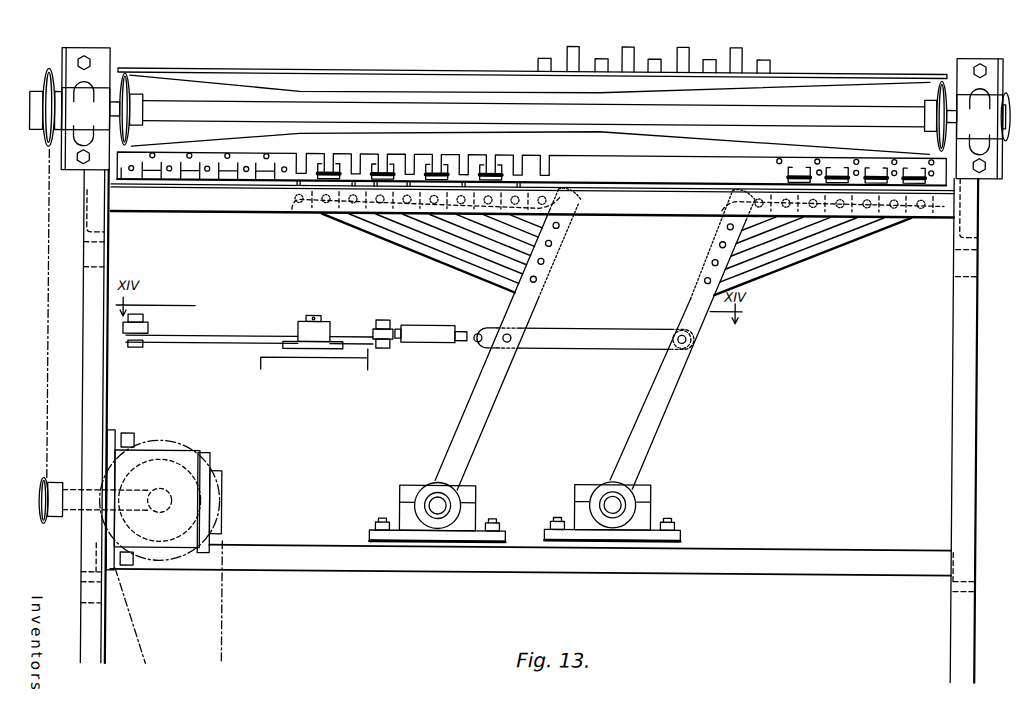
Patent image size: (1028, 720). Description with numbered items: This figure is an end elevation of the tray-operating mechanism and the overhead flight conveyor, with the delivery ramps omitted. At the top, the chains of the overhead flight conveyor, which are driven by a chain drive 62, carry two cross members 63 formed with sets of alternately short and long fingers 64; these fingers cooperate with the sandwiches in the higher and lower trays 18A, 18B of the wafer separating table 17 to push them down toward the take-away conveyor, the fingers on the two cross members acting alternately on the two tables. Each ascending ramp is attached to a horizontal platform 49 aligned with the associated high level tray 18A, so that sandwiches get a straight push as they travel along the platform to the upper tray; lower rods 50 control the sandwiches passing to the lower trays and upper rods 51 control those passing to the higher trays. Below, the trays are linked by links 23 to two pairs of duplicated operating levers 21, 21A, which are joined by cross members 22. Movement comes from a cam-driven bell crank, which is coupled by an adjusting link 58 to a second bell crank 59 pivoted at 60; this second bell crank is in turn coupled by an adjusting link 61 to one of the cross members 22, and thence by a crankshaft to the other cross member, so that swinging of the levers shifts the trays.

The wafer separating table 17 is at (508, 172).
The high level tray 18A is at (447, 166).
The lower tray 18B is at (418, 178).
The operating lever 21 is at (676, 383).
The operating lever 21A is at (500, 388).
The cross member 22 is at (600, 325).
The link 23 is at (448, 245).
The horizontal platform 49 is at (234, 167).
The lower rod 50 is at (154, 152).
The upper rod 51 is at (171, 165).
The adjusting link 58 is at (150, 324).
The second bell crank 59 is at (222, 334).
The pivot 60 is at (315, 313).
The adjusting link 61 is at (438, 323).
The chain drive 62 is at (50, 312).
The cross member 63 is at (468, 68).
The finger 64 is at (601, 57).